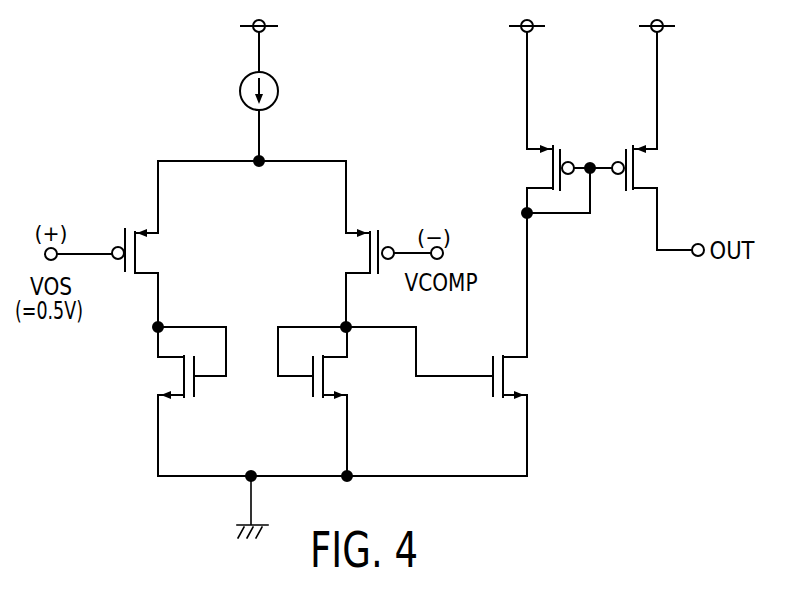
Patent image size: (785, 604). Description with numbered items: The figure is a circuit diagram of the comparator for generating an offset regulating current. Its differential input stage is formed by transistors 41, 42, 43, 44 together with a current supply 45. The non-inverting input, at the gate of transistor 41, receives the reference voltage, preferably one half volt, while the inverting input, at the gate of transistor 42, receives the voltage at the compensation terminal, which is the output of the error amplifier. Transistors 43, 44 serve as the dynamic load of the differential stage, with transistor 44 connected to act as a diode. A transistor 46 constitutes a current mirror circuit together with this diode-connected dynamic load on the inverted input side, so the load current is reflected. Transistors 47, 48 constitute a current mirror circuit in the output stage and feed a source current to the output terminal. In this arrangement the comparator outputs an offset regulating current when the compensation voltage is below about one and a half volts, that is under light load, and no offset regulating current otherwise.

The transistor 41 is at (127, 231).
The transistor 42 is at (373, 231).
The transistor 43 is at (165, 371).
The transistor 44 is at (345, 367).
The current supply 45 is at (281, 84).
The transistor 46 is at (525, 367).
The transistor 47 is at (556, 142).
The transistor 48 is at (660, 177).